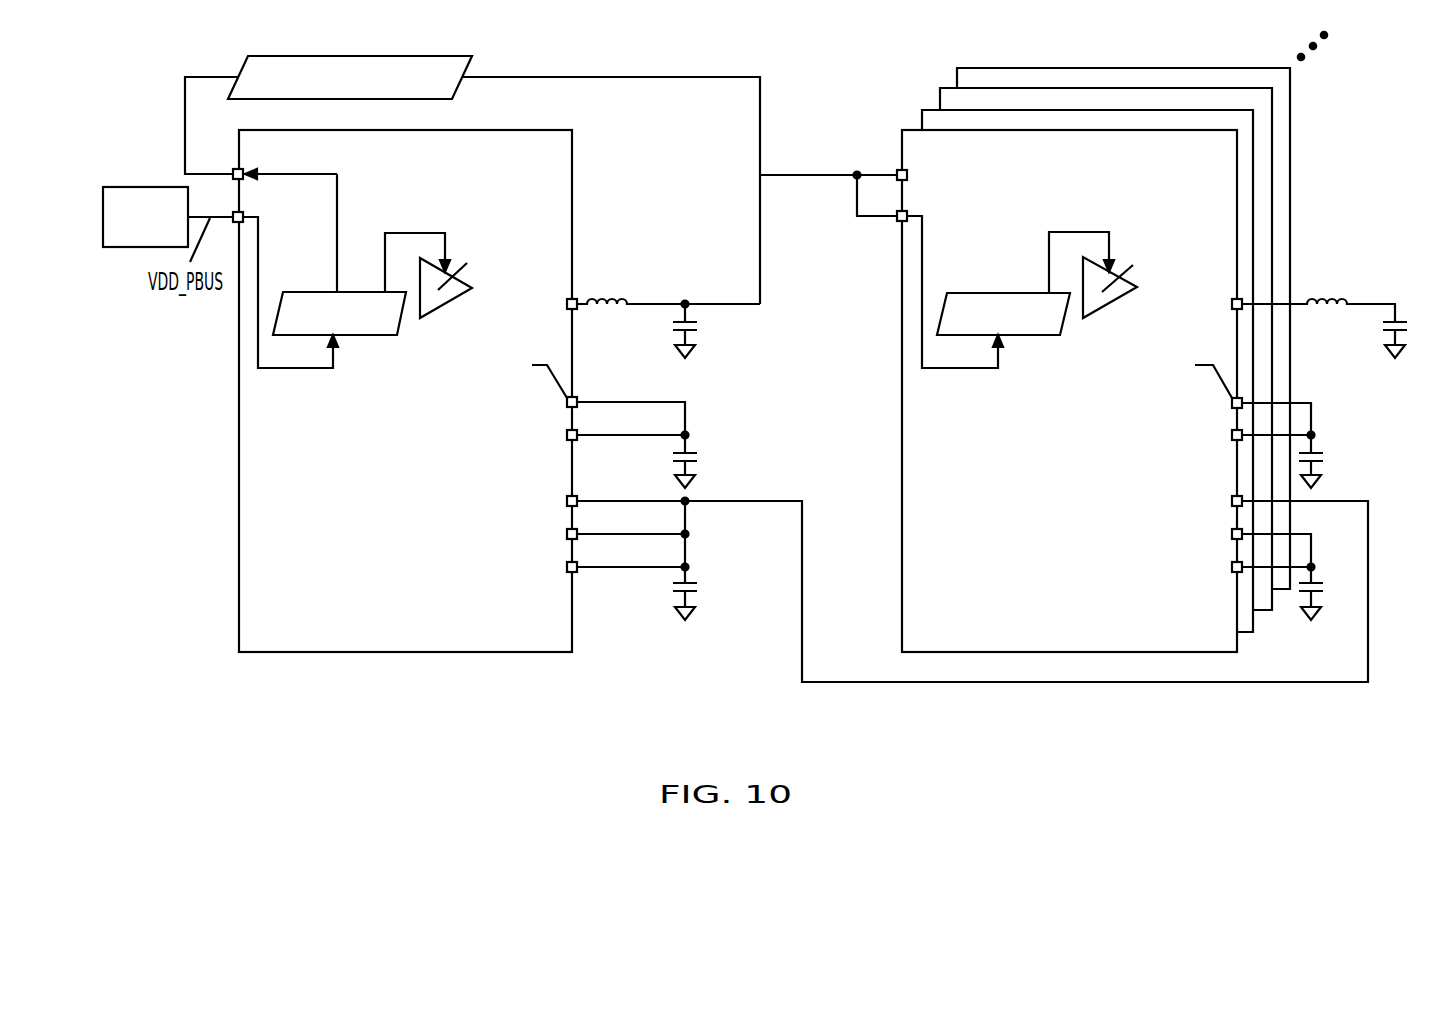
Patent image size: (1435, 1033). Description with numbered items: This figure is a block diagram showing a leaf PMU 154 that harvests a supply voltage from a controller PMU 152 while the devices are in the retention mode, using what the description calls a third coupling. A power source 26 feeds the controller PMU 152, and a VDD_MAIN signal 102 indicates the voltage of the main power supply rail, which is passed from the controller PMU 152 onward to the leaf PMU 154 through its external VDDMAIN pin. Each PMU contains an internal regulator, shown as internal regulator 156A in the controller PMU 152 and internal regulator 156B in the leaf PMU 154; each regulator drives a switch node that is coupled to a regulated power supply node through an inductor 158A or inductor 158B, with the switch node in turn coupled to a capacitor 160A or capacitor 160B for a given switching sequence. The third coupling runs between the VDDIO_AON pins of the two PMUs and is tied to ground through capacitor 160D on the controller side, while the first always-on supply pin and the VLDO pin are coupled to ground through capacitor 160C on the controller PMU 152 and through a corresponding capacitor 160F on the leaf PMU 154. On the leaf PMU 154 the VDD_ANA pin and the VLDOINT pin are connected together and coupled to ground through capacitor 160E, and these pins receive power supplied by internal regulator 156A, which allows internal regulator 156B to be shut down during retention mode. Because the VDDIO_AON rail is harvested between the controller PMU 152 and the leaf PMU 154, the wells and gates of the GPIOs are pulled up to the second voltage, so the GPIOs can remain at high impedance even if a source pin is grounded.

The power source 26 is at (130, 185).
The VDD_MAIN signal 102 is at (347, 55).
The controller PMU 152 is at (518, 172).
The leaf PMU 154 is at (1183, 172).
The internal regulator 156A is at (438, 312).
The internal regulator 156B is at (1107, 308).
The inductor 158A is at (609, 297).
The inductor 158B is at (1319, 297).
The capacitor 160A is at (672, 323).
The capacitor 160B is at (1382, 323).
The capacitor 160C is at (698, 457).
The capacitor 160D is at (700, 585).
The capacitor 160E is at (1327, 587).
The capacitor 160F is at (1327, 458).